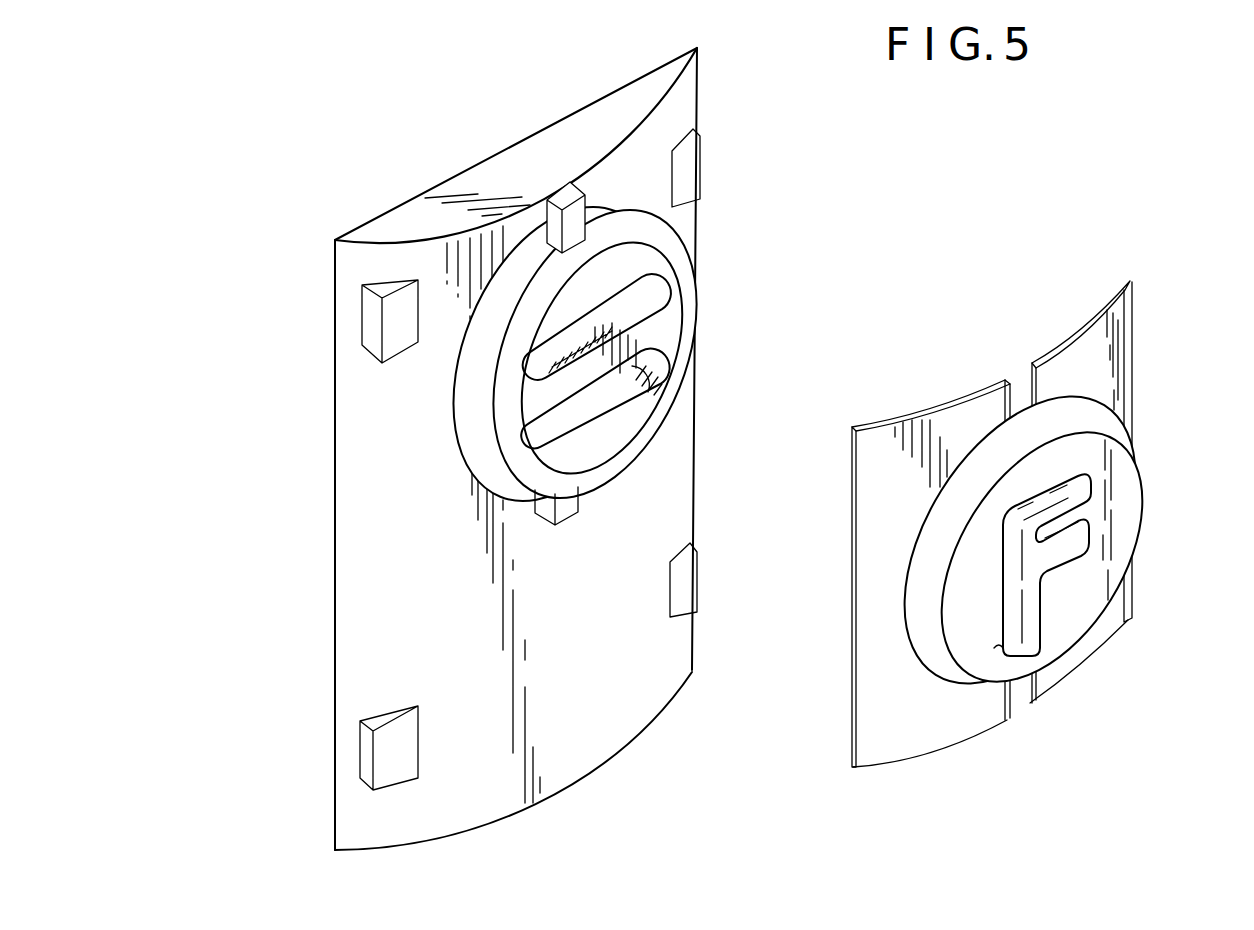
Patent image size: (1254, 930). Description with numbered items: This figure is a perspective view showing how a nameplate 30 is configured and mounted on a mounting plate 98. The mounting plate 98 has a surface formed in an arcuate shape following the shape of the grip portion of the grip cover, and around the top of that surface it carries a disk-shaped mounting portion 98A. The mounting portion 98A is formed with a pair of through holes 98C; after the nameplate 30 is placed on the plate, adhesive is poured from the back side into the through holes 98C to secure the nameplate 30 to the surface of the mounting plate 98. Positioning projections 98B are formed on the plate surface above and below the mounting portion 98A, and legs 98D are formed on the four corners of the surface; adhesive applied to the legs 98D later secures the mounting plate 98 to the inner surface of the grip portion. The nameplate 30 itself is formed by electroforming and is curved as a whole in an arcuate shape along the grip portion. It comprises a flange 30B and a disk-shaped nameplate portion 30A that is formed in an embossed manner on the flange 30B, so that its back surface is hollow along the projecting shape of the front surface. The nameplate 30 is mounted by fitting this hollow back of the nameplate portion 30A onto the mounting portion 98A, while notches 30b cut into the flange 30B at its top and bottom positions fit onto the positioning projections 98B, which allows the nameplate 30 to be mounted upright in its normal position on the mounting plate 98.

The mounting plate 98 is at (300, 581).
The mounting portion 98A is at (667, 331).
The positioning projection 98B is at (565, 512).
The through hole 98C is at (612, 286).
The leg 98D is at (694, 157).
The nameplate 30 is at (998, 475).
The nameplate portion 30A is at (1127, 505).
The flange 30B is at (870, 685).
The notch 30b is at (1022, 387).